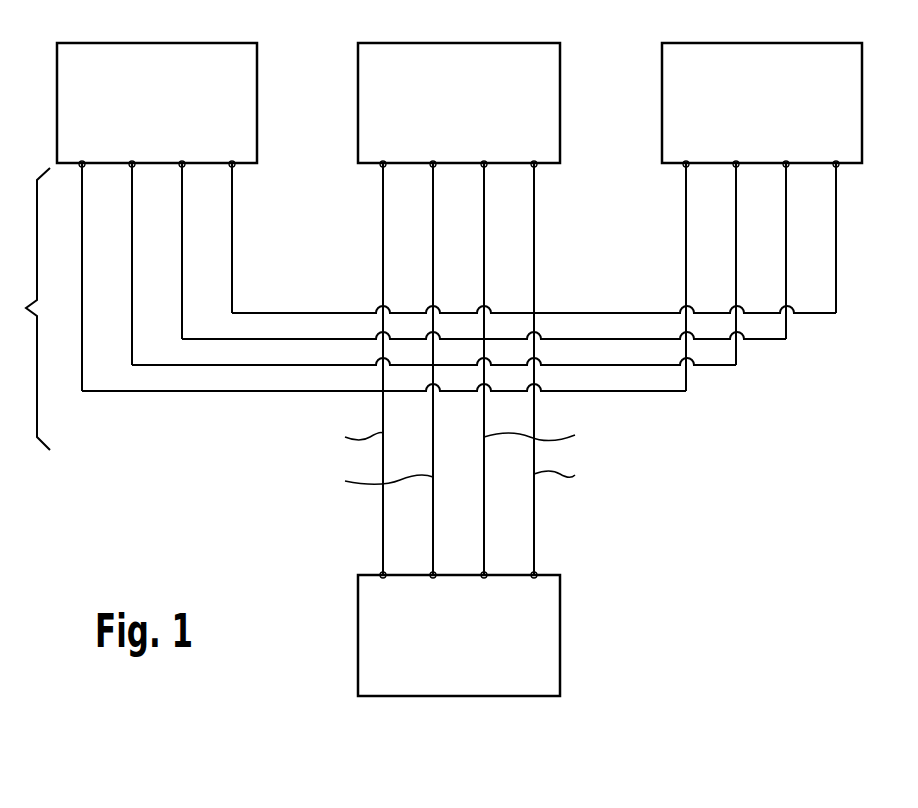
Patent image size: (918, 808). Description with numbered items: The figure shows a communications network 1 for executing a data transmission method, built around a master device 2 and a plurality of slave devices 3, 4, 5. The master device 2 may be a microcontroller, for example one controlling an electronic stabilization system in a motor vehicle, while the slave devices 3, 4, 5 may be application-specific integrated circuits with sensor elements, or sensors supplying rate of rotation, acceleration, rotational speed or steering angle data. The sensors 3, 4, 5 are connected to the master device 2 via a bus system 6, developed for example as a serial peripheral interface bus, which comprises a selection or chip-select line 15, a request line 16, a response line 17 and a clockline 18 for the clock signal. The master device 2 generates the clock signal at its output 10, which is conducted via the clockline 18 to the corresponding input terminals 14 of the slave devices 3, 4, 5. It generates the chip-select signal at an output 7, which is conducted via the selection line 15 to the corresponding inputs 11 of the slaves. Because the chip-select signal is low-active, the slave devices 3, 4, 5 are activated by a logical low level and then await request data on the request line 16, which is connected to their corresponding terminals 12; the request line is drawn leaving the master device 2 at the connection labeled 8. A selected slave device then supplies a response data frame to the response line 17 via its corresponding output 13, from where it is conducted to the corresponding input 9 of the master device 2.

The communications network 1 is at (782, 558).
The master device 2 is at (551, 655).
The slave device 3 is at (250, 77).
The slave device 4 is at (552, 133).
The slave device 5 is at (673, 80).
The bus system 6 is at (28, 309).
The output 7 is at (383, 575).
The MOSI data line 8 is at (360, 522).
The input 9 is at (541, 499).
The output 10 is at (565, 521).
The input 11 is at (84, 167).
The terminal 12 is at (134, 167).
The output 13 is at (184, 167).
The input terminal 14 is at (234, 167).
The chip-select line 15 is at (98, 393).
The MOSI line 16 is at (132, 325).
The MISO line 17 is at (182, 305).
The clockline 18 is at (233, 290).